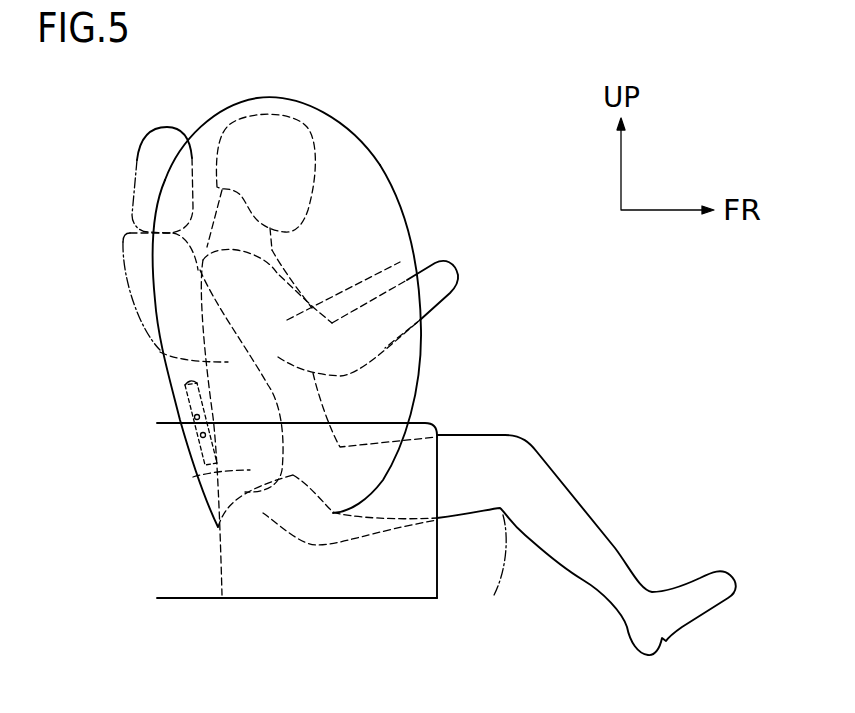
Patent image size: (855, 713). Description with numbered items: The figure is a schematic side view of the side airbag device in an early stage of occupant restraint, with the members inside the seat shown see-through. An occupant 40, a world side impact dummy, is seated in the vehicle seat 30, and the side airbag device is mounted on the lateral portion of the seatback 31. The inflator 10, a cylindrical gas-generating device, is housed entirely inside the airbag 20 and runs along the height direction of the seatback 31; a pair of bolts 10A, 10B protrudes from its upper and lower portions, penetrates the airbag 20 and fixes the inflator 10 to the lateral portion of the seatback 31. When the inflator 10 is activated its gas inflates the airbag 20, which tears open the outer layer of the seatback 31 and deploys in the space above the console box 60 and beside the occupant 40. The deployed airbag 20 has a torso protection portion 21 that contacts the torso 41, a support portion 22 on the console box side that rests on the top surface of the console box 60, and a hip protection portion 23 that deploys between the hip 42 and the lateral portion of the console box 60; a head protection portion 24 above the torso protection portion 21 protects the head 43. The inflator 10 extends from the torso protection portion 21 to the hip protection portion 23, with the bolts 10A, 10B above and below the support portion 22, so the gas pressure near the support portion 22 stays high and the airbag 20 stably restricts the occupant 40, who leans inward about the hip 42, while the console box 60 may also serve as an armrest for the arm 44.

The inflator 10 is at (185, 395).
The bolt 10A is at (193, 420).
The bolt 10B is at (199, 440).
The airbag 20 is at (371, 179).
The torso protection portion 21 is at (250, 382).
The support portion 22 is at (300, 417).
The hip protection portion 23 is at (207, 502).
The head protection portion 24 is at (268, 160).
The vehicle seat 30 is at (96, 224).
The seatback 31 is at (140, 273).
The occupant 40 is at (317, 148).
The torso 41 is at (160, 350).
The hip 42 is at (193, 477).
The head 43 is at (258, 126).
The arm 44 is at (405, 262).
The console box 60 is at (173, 600).